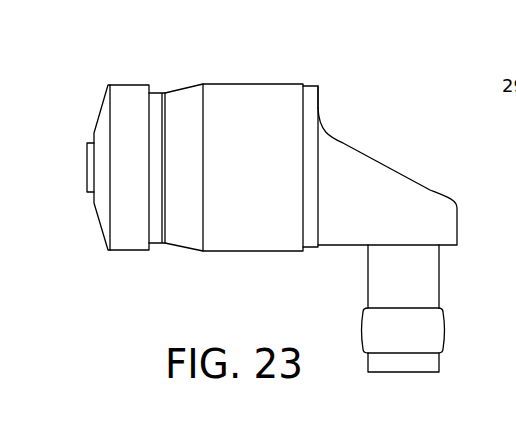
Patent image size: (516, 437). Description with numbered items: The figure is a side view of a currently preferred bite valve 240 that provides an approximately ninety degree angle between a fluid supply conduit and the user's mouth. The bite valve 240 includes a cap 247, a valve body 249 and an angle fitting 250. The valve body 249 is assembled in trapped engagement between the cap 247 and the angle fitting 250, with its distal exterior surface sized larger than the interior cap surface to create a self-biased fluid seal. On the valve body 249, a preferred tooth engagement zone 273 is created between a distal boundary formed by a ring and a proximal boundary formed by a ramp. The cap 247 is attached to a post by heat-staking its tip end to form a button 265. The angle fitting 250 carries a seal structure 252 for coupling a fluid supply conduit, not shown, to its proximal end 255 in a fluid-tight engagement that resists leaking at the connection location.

The bite valve 240 is at (380, 108).
The cap 247 is at (125, 98).
The valve body 249 is at (230, 235).
The angle fitting 250 is at (399, 190).
The seal structure 252 is at (437, 322).
The proximal end 255 is at (403, 362).
The button 265 is at (83, 182).
The tooth engagement zone 273 is at (158, 93).